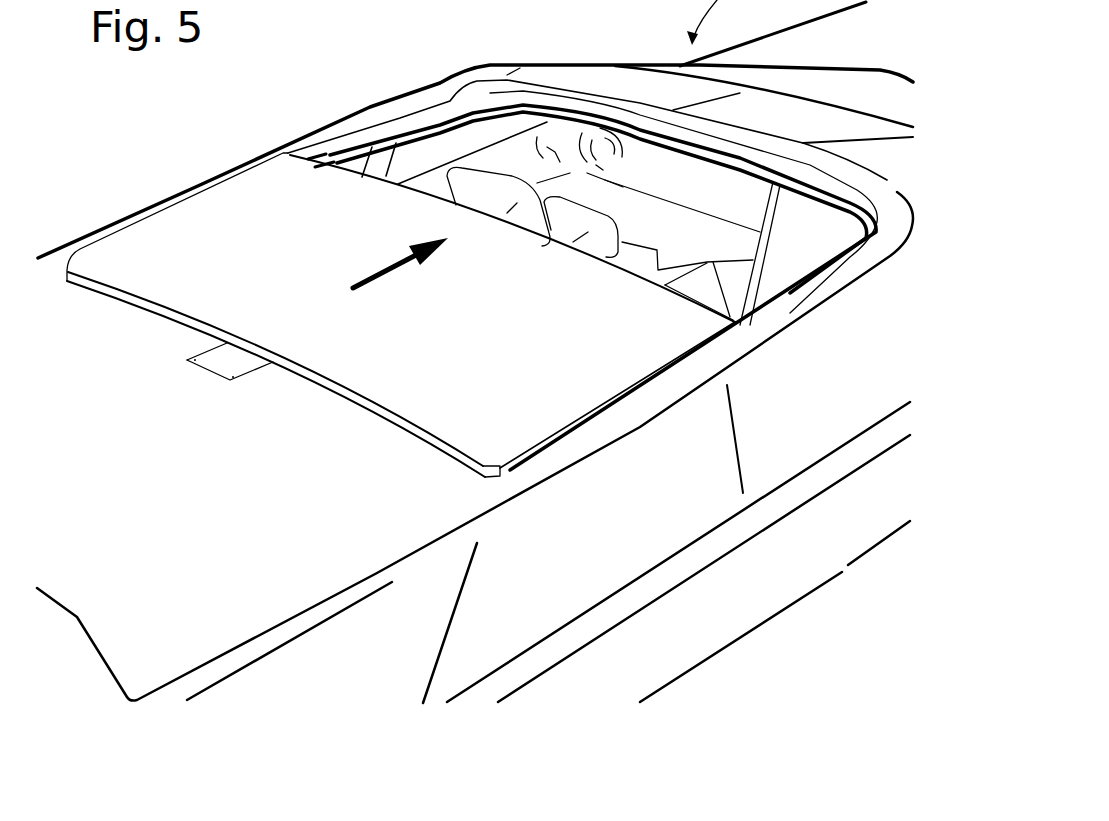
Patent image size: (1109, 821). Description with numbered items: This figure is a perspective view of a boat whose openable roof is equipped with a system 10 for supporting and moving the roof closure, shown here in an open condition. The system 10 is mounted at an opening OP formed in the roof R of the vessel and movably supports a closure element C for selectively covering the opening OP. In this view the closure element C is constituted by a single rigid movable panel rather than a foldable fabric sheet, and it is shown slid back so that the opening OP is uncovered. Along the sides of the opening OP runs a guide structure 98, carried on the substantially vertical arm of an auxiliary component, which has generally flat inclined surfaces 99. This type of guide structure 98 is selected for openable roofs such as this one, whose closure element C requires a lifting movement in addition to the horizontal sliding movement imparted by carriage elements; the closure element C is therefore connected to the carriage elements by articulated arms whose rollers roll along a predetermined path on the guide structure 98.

The system for supporting and moving the openable roof 10 is at (407, 128).
The guide structure 98 is at (321, 152).
The flat inclined surfaces 99 is at (332, 114).
The roof R is at (63, 308).
The opening OP is at (788, 280).
The closure element C is at (552, 410).